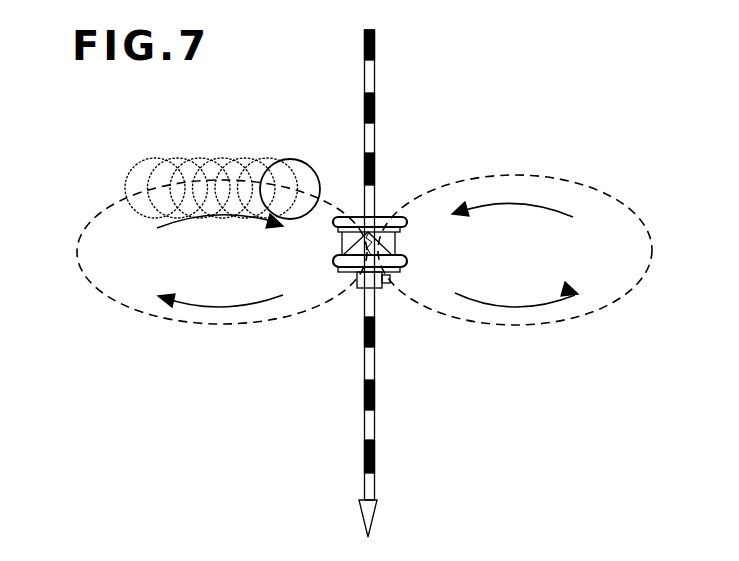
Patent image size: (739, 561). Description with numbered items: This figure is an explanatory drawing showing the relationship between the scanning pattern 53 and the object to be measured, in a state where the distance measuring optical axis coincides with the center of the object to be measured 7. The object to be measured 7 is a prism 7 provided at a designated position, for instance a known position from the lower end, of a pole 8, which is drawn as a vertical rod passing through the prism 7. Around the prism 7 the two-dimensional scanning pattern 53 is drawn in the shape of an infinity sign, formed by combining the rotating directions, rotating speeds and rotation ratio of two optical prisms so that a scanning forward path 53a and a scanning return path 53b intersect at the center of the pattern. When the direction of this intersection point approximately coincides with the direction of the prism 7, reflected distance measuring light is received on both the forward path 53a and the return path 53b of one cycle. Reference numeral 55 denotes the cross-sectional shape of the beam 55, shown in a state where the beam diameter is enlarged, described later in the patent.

The prism 7 is at (387, 218).
The pole 8 is at (375, 140).
The scanning pattern 53 is at (537, 175).
The forward path 53a is at (207, 217).
The return path 53b is at (511, 203).
The cross-sectional shape of a beam 55 is at (301, 167).